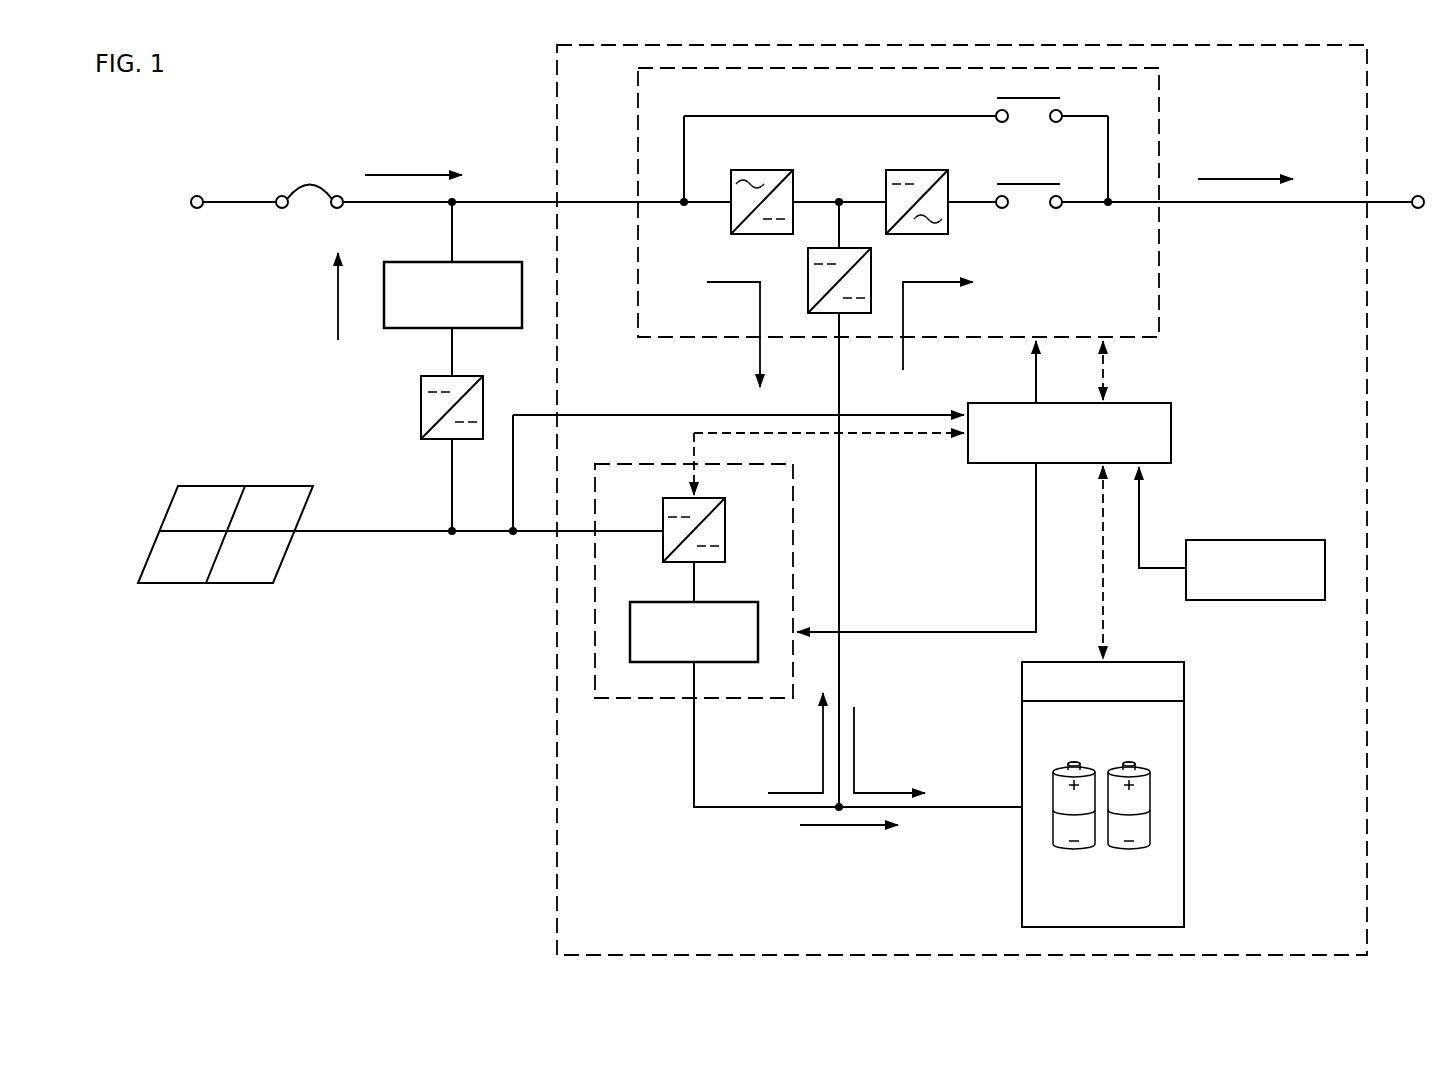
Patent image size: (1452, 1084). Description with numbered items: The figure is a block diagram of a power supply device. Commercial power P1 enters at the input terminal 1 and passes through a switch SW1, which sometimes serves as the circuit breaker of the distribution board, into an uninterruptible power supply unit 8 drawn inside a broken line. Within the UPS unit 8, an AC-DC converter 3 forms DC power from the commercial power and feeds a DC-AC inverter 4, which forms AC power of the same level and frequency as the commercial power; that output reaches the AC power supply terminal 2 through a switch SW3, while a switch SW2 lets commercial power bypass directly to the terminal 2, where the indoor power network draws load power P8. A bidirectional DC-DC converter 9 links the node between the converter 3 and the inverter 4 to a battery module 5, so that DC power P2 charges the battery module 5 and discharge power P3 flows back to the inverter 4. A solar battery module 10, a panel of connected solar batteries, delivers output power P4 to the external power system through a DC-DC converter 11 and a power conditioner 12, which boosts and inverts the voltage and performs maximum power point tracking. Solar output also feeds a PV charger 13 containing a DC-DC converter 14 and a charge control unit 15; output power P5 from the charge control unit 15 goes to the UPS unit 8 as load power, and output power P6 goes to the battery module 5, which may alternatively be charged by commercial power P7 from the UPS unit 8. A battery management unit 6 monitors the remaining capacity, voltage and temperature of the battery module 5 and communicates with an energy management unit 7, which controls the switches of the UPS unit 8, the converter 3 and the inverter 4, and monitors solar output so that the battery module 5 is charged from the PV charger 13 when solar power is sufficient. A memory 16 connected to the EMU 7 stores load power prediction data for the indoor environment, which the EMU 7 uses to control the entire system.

The input terminal 1 is at (195, 196).
The AC power supply terminal 2 is at (1422, 197).
The AC-DC converter 3 is at (762, 170).
The DC-AC inverter 4 is at (915, 170).
The battery module 5 is at (1022, 780).
The battery management unit 6 is at (1184, 682).
The energy management unit 7 is at (1171, 433).
The uninterruptible power supply unit 8 is at (638, 148).
The DC-DC converter 9 is at (808, 287).
The solar battery module 10 is at (218, 486).
The DC-DC converter 11 is at (421, 420).
The power conditioner 12 is at (384, 302).
The PV charger 13 is at (595, 642).
The DC-DC converter 14 is at (725, 530).
The charge control unit 15 is at (655, 663).
The memory 16 is at (1308, 540).
The switch SW1 is at (310, 185).
The switch SW2 is at (1006, 97).
The switch SW3 is at (1032, 186).
The commercial power P1 is at (410, 175).
The DC power P2 is at (735, 282).
The discharge power P3 is at (903, 352).
The output power P4 is at (338, 330).
The output power P5 is at (823, 766).
The output power P6 is at (854, 766).
The commercial power P7 is at (840, 832).
The load power P8 is at (1240, 179).